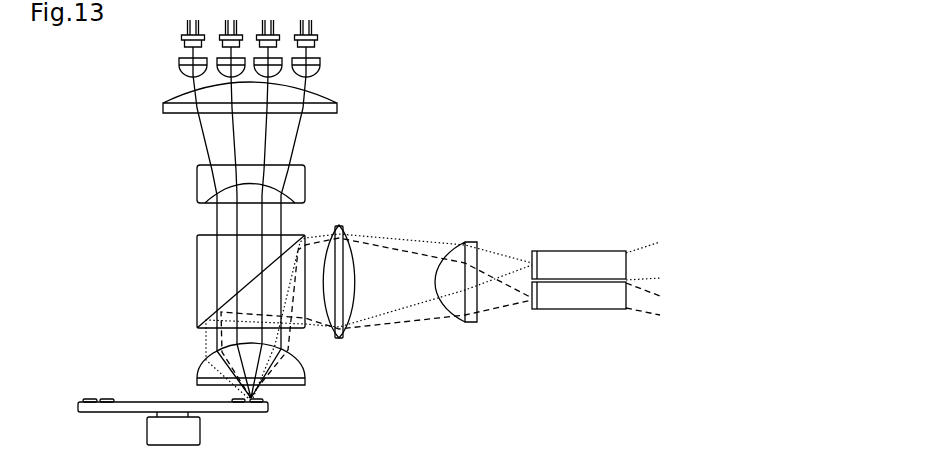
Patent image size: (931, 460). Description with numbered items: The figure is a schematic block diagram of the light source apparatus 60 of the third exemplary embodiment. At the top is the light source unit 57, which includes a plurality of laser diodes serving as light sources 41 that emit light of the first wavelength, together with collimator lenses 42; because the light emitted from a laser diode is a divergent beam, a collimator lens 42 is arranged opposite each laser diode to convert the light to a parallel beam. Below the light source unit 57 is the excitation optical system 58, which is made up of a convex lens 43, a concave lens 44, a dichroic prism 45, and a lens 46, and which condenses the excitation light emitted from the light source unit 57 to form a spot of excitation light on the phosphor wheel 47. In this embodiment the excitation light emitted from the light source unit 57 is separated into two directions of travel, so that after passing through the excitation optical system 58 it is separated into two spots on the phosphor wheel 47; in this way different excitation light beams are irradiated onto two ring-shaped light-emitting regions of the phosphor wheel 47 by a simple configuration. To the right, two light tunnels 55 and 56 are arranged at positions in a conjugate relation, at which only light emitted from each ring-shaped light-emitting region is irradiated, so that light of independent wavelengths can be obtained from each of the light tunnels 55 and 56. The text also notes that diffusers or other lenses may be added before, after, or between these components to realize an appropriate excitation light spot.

The light source 41 is at (317, 44).
The collimator lens 42 is at (320, 67).
The convex lens 43 is at (337, 108).
The concave lens 44 is at (305, 183).
The dichroic prism 45 is at (197, 258).
The lens 46 is at (305, 381).
The phosphor wheel 47 is at (268, 405).
The light tunnel 55 is at (592, 251).
The light tunnel 56 is at (600, 310).
The light source unit 57 is at (398, 18).
The excitation optical system 58 is at (156, 172).
The light source apparatus 60 is at (461, 54).